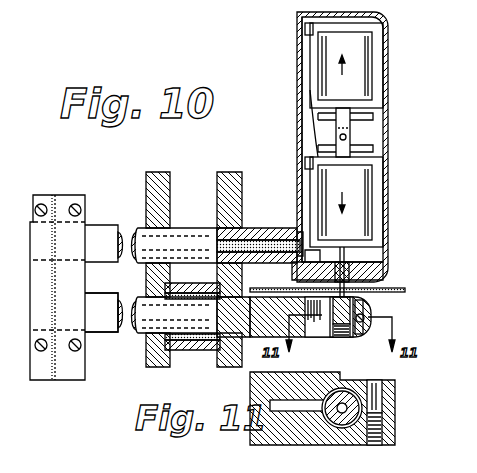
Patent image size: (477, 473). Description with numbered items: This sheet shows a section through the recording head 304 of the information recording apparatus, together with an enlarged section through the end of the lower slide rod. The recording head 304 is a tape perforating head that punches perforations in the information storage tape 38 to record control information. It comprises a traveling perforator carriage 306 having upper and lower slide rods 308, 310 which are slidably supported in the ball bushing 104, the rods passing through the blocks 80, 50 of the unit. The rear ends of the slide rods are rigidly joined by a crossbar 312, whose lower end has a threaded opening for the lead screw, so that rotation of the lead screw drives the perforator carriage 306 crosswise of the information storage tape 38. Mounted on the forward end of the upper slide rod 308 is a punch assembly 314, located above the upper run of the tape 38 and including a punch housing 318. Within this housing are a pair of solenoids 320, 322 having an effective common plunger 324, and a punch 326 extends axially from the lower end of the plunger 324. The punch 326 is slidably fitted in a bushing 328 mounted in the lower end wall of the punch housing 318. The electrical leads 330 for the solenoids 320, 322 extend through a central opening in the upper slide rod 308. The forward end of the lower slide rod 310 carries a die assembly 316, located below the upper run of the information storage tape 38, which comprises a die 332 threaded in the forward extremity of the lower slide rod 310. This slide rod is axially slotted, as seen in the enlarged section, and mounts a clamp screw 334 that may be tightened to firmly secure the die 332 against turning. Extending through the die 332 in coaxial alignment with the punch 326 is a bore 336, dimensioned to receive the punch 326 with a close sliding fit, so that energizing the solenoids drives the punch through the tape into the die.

In FIG. 10, the information storage tape 38 is at (385, 294).
In FIG. 10, the support block 50 is at (246, 190).
In FIG. 10, the support block 80 is at (174, 182).
In FIG. 10, the ball bushing 104 is at (186, 316).
In FIG. 10, the recording head 304 is at (398, 52).
In FIG. 10, the perforator carriage 306 is at (98, 186).
In FIG. 10, the upper slide rod 308 is at (120, 216).
In FIG. 10, the lower slide rod 310 is at (105, 330).
In FIG. 11, the lower slide rod 310 is at (256, 430).
In FIG. 10, the crossbar 312 is at (55, 378).
In FIG. 10, the punch assembly 314 is at (358, 137).
In FIG. 10, the die assembly 316 is at (360, 300).
In FIG. 10, the punch housing 318 is at (391, 93).
In FIG. 10, the solenoid 320 is at (366, 72).
In FIG. 10, the solenoid 322 is at (364, 200).
In FIG. 10, the common plunger 324 is at (374, 118).
In FIG. 10, the punch 326 is at (346, 254).
In FIG. 10, the bushing 328 is at (386, 272).
In FIG. 10, the electrical leads 330 is at (105, 303).
In FIG. 10, the die 332 is at (334, 322).
In FIG. 11, the die 332 is at (380, 384).
In FIG. 10, the clamp screw 334 is at (365, 318).
In FIG. 11, the clamp screw 334 is at (385, 400).
In FIG. 11, the bore 336 is at (342, 412).